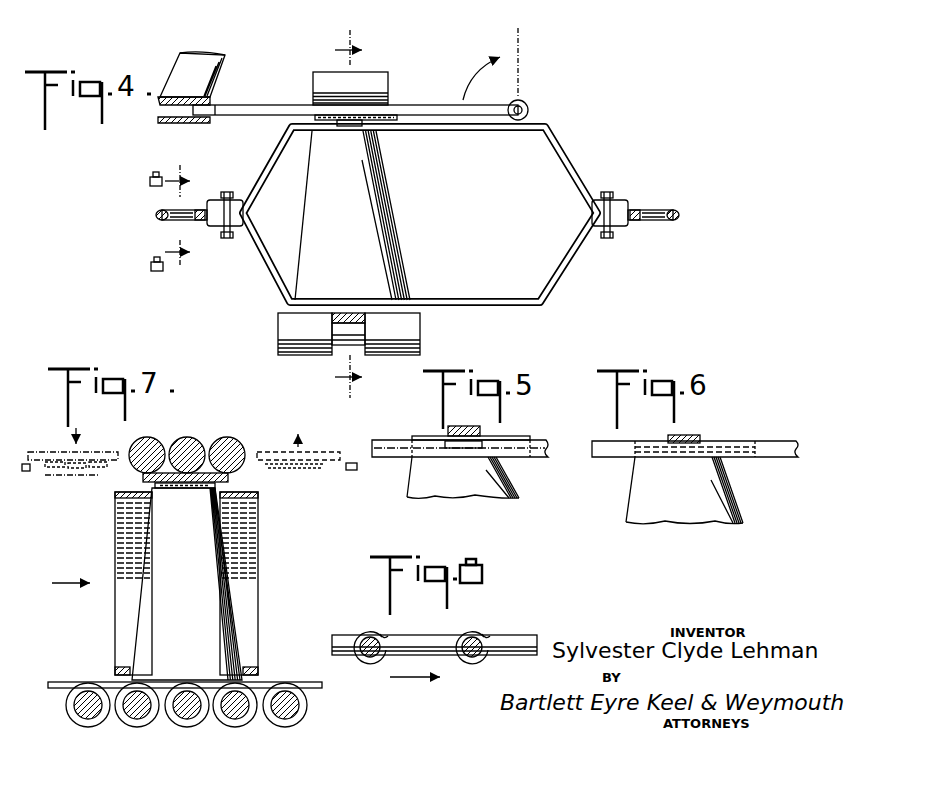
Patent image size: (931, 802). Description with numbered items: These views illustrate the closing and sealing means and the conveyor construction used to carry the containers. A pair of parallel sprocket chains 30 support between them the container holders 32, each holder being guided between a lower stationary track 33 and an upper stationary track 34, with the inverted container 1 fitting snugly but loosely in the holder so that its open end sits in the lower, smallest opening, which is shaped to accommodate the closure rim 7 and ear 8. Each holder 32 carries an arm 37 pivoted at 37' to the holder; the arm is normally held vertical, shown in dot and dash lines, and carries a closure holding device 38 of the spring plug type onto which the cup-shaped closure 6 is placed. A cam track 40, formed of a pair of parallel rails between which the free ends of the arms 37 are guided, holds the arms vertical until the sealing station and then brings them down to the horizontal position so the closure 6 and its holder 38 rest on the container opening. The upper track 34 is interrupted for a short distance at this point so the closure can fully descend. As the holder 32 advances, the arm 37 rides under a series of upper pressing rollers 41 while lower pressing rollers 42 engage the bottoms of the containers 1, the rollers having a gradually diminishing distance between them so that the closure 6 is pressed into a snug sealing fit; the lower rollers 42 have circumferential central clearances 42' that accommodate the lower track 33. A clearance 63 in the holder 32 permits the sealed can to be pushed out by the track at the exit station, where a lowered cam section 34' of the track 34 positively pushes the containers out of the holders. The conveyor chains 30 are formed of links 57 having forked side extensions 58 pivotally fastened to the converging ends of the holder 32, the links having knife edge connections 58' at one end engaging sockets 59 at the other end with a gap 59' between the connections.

In FIG. 4, the container 1 is at (400, 233).
In FIG. 7, the container 1 is at (187, 584).
In FIG. 5, the container 1 is at (430, 490).
In FIG. 6, the container 1 is at (630, 506).
In FIG. 7, the closure 6 is at (72, 480).
In FIG. 4, the closure rim 7 is at (349, 212).
In FIG. 5, the closure rim 7 is at (416, 437).
In FIG. 5, the ear 8 is at (522, 437).
In FIG. 4, the sprocket chain 30 is at (170, 222).
In FIG. 4, the container holder 32 is at (530, 308).
In FIG. 7, the container holder 32 is at (115, 606).
In FIG. 5, the container holder 32 is at (541, 446).
In FIG. 6, the container holder 32 is at (773, 440).
In FIG. 4, the lower stationary track 33 is at (345, 323).
In FIG. 7, the lower stationary track 33 is at (262, 682).
In FIG. 7, the upper stationary track 34 is at (189, 489).
In FIG. 5, the upper stationary track 34 is at (464, 419).
In FIG. 6, the cam section of track 34' is at (691, 423).
In FIG. 4, the arm 37 is at (355, 214).
In FIG. 7, the arm 37 is at (184, 440).
In FIG. 4, the pivot 37' is at (517, 74).
In FIG. 4, the closure holding device 38 is at (377, 124).
In FIG. 7, the closure holding device 38 is at (90, 462).
In FIG. 4, the cam track 40 is at (230, 56).
In FIG. 4, the upper pressing roller 41 is at (378, 82).
In FIG. 7, the upper pressing roller 41 is at (220, 440).
In FIG. 4, the lower pressing roller 42 is at (369, 334).
In FIG. 7, the lower pressing roller 42 is at (208, 705).
In FIG. 4, the circumferential central clearance 42' is at (365, 351).
In FIG. 7, the circumferential central clearance 42' is at (186, 716).
In FIG. 4, the sprocket chain link 57 is at (650, 206).
In FIG. 8, the sprocket chain link 57 is at (408, 641).
In FIG. 4, the forked side extension 58 is at (422, 235).
In FIG. 8, the knife edge connection 58' is at (439, 622).
In FIG. 8, the socket 59 is at (421, 672).
In FIG. 8, the gap 59' is at (411, 634).
In FIG. 4, the clearance 63 is at (350, 126).
In FIG. 5, the clearance 63 is at (469, 450).